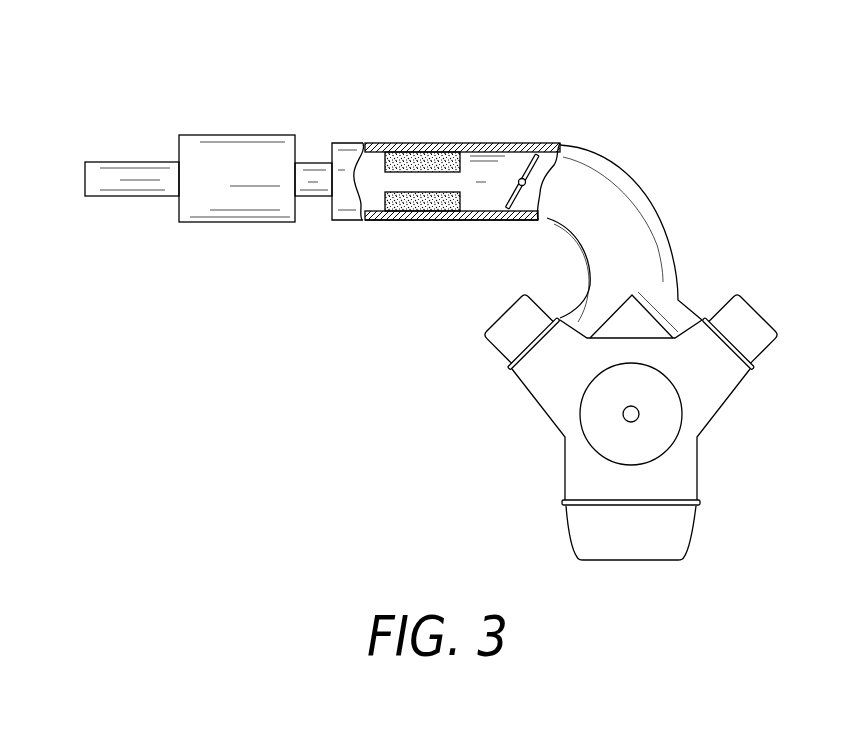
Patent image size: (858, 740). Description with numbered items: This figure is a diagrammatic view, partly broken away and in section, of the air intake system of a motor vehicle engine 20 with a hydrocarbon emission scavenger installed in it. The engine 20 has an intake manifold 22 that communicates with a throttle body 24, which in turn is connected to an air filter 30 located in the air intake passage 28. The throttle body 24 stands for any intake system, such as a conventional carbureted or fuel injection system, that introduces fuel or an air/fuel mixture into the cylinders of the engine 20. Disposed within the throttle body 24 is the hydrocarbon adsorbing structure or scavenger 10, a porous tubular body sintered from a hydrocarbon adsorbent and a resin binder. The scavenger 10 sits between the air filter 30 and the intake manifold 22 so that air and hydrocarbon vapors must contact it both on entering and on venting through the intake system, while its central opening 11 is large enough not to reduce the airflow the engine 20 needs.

The hydrocarbon adsorbing structure 10 is at (464, 152).
The central opening 11 is at (410, 180).
The engine 20 is at (727, 398).
The intake manifold 22 is at (668, 243).
The throttle body 24 is at (537, 171).
The air intake passage 28 is at (441, 220).
The air filter 30 is at (228, 159).